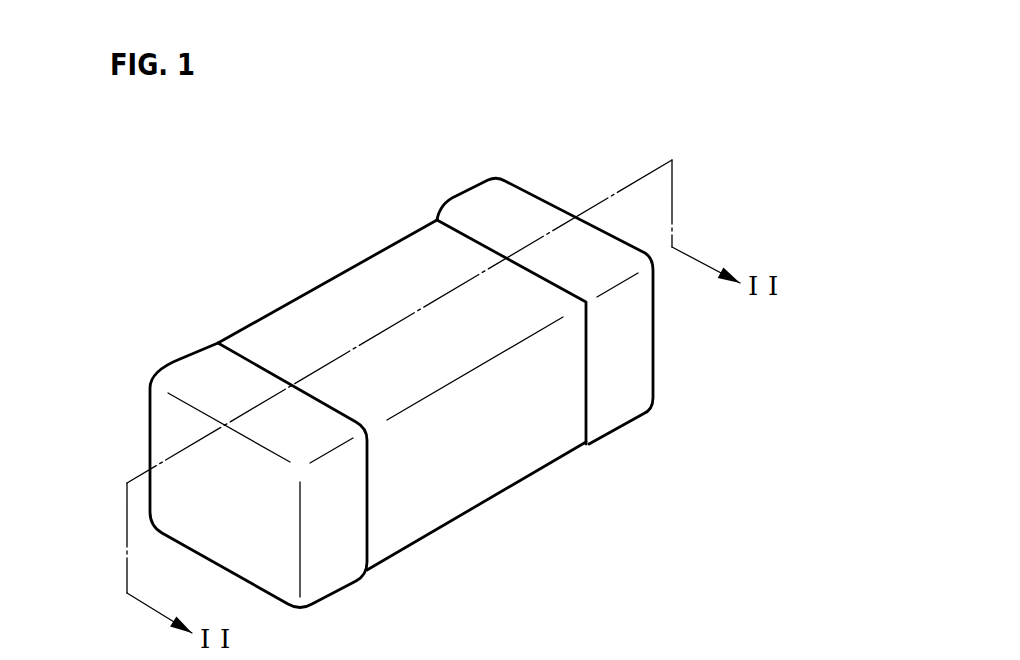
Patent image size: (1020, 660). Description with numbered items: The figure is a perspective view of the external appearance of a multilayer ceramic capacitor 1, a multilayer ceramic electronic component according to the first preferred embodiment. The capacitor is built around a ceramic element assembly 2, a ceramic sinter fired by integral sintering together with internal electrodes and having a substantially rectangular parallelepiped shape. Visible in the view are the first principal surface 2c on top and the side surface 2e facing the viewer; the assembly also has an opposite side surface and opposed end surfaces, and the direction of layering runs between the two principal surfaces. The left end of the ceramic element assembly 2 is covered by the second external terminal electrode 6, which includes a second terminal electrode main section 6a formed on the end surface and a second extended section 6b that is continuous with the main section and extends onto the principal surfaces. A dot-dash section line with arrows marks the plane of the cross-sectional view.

The multilayer ceramic capacitor 1 is at (227, 262).
The ceramic element assembly 2 is at (367, 260).
The first principal surface 2c is at (328, 315).
The side surface 2e is at (465, 463).
The second external terminal electrode 6 is at (81, 346).
The second terminal electrode main section 6a is at (173, 432).
The second extended section 6b is at (202, 382).